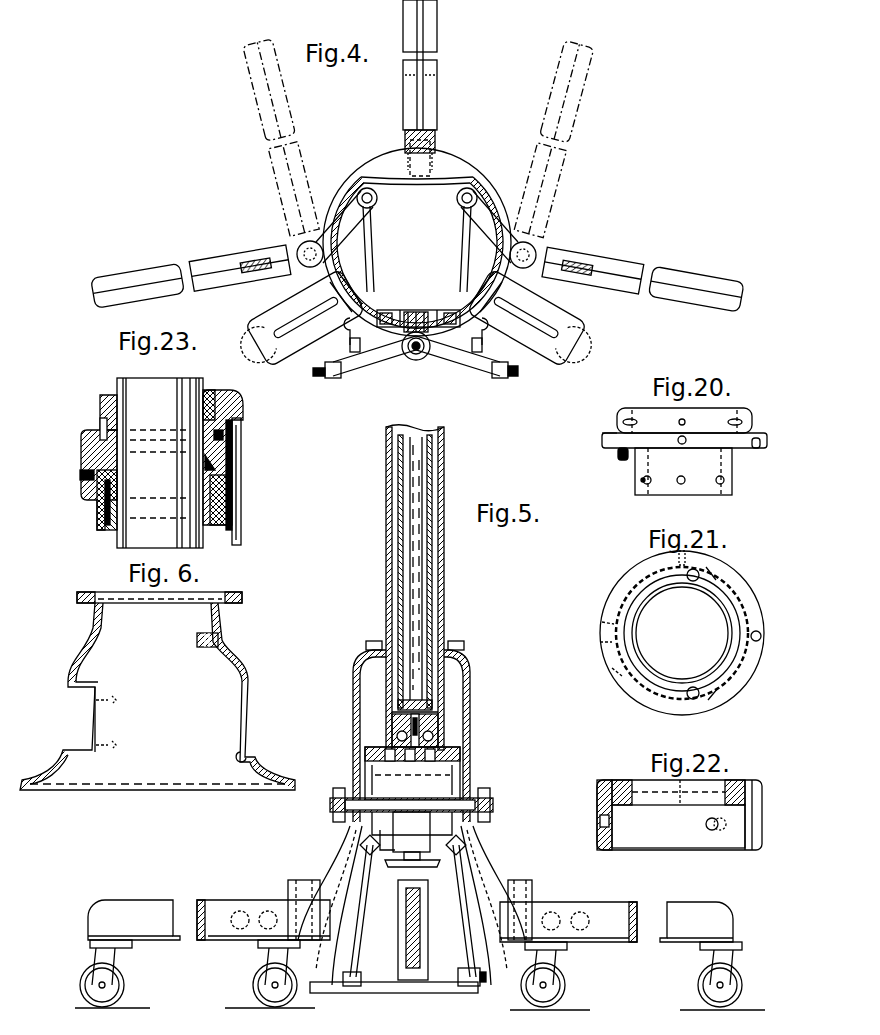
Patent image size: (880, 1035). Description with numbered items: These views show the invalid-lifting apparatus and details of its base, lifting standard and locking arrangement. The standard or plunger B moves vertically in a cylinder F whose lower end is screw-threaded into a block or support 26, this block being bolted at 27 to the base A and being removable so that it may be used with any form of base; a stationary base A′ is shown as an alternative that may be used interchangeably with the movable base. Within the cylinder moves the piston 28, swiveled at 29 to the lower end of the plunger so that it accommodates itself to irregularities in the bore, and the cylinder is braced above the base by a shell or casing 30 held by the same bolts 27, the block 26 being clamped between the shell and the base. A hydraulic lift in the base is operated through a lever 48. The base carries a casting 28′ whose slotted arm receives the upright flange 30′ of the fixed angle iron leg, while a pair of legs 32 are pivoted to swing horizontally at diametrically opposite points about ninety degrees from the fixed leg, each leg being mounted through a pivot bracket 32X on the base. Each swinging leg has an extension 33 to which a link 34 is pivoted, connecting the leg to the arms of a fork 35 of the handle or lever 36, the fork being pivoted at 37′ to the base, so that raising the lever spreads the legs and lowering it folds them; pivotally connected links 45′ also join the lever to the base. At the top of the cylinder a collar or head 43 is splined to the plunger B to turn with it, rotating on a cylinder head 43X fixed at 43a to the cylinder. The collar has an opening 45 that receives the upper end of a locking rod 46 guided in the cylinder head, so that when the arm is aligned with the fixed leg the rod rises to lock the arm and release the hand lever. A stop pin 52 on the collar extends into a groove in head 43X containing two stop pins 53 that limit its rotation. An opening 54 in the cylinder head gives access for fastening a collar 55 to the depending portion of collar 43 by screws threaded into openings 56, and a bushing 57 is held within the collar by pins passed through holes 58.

In FIG. 5, the block or support 26 is at (425, 788).
In FIG. 5, the bolts 27 is at (494, 806).
In FIG. 5, the piston 28 is at (392, 732).
In FIG. 4, the casting 28′ is at (437, 150).
In FIG. 5, the swivel 29 is at (397, 705).
In FIG. 5, the shell or casing 30 is at (357, 682).
In FIG. 4, the upright flange of fixed leg 30′ is at (425, 108).
In FIG. 4, the swinging legs 32 is at (160, 272).
In FIG. 5, the swinging legs 32 is at (156, 914).
In FIG. 4, the arm pivot block 32X is at (567, 242).
In FIG. 5, the arm pivot block 32X is at (558, 882).
In FIG. 4, the extension 33 is at (462, 234).
In FIG. 5, the extension 33 is at (346, 990).
In FIG. 4, the link 34 is at (462, 279).
In FIG. 5, the link 34 is at (466, 896).
In FIG. 4, the fork 35 is at (388, 356).
In FIG. 4, the handle or lever 36 is at (428, 357).
In FIG. 4, the pivot 37′ is at (494, 366).
In FIG. 5, the pivot 37′ is at (467, 988).
In FIG. 23, the collar or head 43 is at (232, 410).
In FIG. 23, the fastening of cylinder head 43a is at (80, 478).
In FIG. 23, the cylinder head 43X is at (243, 463).
In FIG. 20, the cylinder head 43X is at (622, 425).
In FIG. 21, the cylinder head 43X is at (605, 616).
In FIG. 22, the cylinder head 43X is at (600, 805).
In FIG. 23, the opening 45 is at (243, 428).
In FIG. 20, the opening 45 is at (757, 450).
In FIG. 4, the link 45′ is at (428, 318).
In FIG. 23, the locking rod 46 is at (232, 515).
In FIG. 5, the lever 48 is at (410, 960).
In FIG. 23, the stop pin 52 is at (103, 414).
In FIG. 20, the stop pin 52 is at (623, 460).
In FIG. 23, the stop pins 53 is at (224, 447).
In FIG. 21, the stop pins 53 is at (700, 576).
In FIG. 22, the stop pins 53 is at (690, 796).
In FIG. 21, the opening 54 is at (614, 690).
In FIG. 23, the collar 55 is at (216, 468).
In FIG. 20, the screw openings 56 is at (642, 484).
In FIG. 23, the bushing 57 is at (210, 396).
In FIG. 20, the holes 58 is at (628, 418).
In FIG. 5, the base A is at (344, 860).
In FIG. 6, the stationary base A′ is at (238, 656).
In FIG. 23, the standard or plunger B is at (175, 517).
In FIG. 5, the standard or plunger B is at (418, 477).
In FIG. 23, the cylinder F is at (100, 516).
In FIG. 5, the cylinder F is at (386, 592).